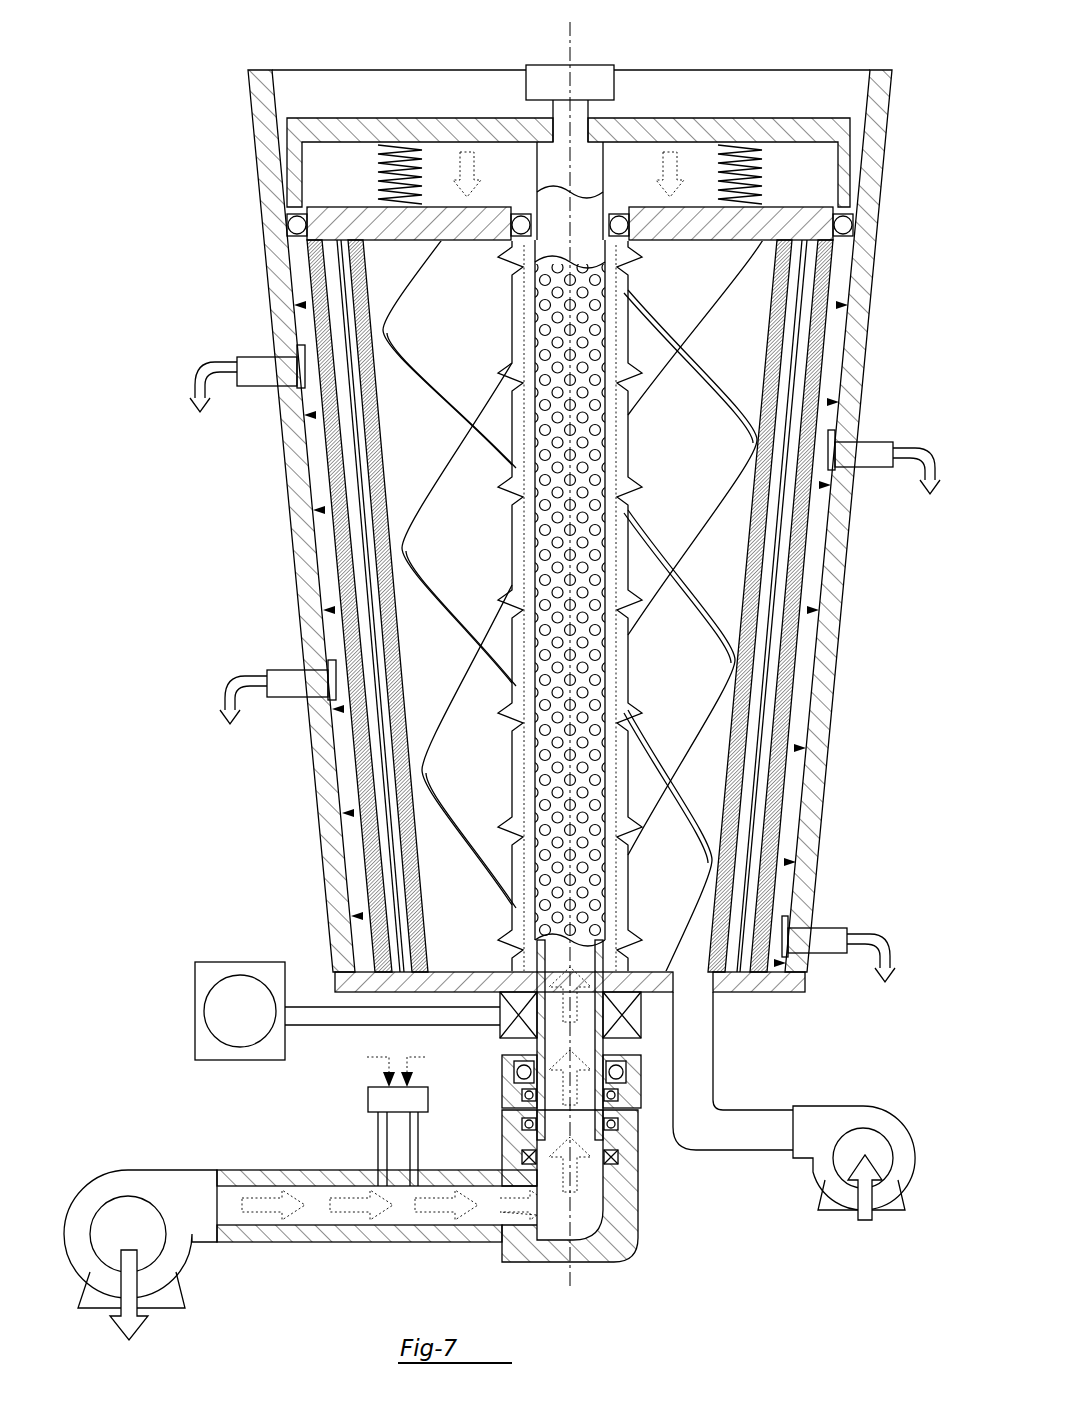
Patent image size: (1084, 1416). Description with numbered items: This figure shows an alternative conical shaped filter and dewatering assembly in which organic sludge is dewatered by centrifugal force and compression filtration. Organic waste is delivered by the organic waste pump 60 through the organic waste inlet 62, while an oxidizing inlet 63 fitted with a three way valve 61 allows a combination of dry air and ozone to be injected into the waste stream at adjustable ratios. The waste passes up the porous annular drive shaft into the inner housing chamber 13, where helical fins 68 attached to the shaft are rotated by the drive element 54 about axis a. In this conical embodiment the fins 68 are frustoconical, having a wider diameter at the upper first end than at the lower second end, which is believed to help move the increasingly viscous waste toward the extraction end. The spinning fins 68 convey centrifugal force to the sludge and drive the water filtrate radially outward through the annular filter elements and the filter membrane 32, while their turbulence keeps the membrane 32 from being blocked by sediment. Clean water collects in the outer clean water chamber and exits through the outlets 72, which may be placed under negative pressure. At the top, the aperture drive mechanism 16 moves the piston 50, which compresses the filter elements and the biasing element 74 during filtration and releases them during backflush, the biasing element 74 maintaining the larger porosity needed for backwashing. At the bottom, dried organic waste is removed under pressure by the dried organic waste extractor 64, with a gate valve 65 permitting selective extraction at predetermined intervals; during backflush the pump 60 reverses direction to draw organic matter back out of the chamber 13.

The axis a is at (571, 38).
The inner housing chamber 13 is at (752, 340).
The aperture drive mechanism 16 is at (598, 66).
The filter membrane 32 is at (340, 283).
The piston 50 is at (803, 207).
The drive element 54 is at (249, 962).
The organic waste pump 60 is at (182, 1170).
The three way valve 61 is at (428, 1100).
The organic waste inlet 62 is at (350, 1170).
The oxidizing inlet 63 is at (418, 1150).
The dried organic waste extractor 64 is at (850, 1106).
The gate valve 65 is at (713, 1046).
The helical fins 68 is at (415, 510).
The outlet 72 is at (253, 357).
The biasing element 74 is at (262, 118).